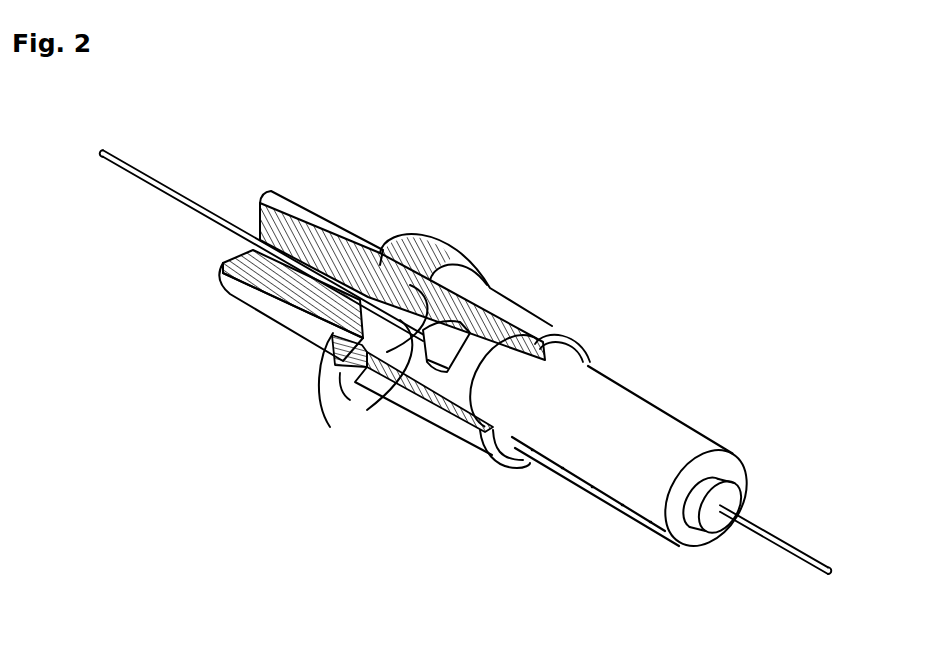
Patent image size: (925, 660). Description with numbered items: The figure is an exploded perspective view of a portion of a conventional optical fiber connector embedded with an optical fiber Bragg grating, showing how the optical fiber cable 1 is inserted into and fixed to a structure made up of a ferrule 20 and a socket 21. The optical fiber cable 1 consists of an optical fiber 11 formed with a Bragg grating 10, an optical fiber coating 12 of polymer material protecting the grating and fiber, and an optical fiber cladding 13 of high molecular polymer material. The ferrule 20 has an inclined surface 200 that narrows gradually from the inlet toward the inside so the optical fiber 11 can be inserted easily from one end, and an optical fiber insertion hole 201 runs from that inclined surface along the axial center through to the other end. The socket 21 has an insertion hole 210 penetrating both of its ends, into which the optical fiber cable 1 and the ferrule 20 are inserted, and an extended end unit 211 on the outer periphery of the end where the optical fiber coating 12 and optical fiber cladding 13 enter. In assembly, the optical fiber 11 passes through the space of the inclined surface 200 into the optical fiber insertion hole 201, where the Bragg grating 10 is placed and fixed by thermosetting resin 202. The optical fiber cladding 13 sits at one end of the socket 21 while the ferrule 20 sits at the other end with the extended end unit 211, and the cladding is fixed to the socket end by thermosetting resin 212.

The optical fiber cable 1 is at (650, 391).
The Bragg grating 10 is at (275, 300).
The optical fiber 11 is at (137, 168).
The optical fiber coating 12 is at (693, 548).
The optical fiber cladding 13 is at (578, 493).
The ferrule 20 is at (324, 206).
The socket 21 is at (465, 249).
The inclined surface 200 is at (343, 380).
The optical fiber insertion hole 201 is at (324, 366).
The thermosetting resin 202 is at (229, 287).
The insertion hole 210 is at (418, 402).
The extended end unit 211 is at (341, 384).
The thermosetting resin 212 is at (501, 453).